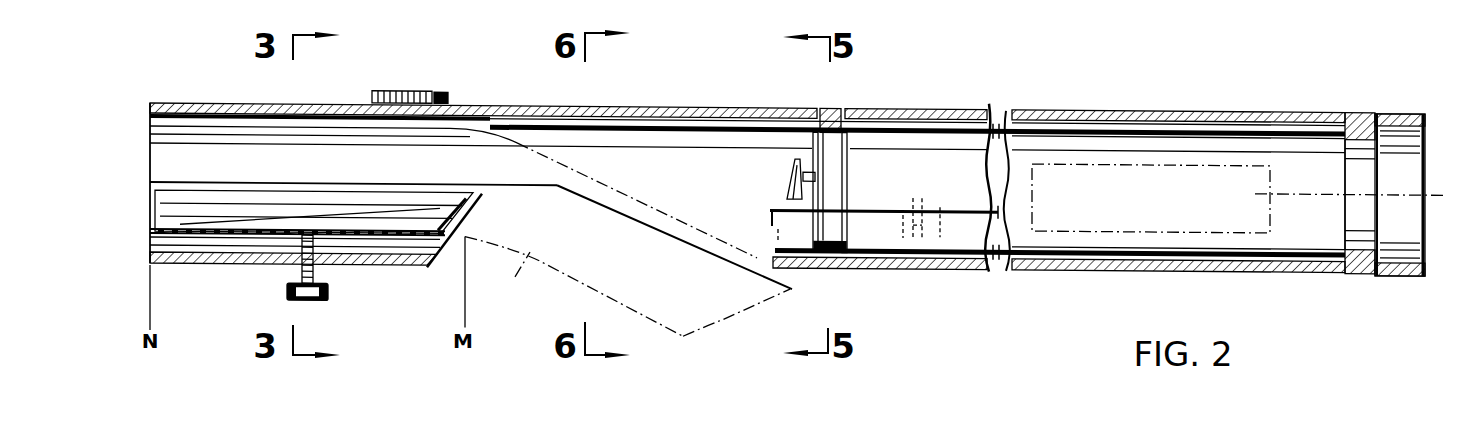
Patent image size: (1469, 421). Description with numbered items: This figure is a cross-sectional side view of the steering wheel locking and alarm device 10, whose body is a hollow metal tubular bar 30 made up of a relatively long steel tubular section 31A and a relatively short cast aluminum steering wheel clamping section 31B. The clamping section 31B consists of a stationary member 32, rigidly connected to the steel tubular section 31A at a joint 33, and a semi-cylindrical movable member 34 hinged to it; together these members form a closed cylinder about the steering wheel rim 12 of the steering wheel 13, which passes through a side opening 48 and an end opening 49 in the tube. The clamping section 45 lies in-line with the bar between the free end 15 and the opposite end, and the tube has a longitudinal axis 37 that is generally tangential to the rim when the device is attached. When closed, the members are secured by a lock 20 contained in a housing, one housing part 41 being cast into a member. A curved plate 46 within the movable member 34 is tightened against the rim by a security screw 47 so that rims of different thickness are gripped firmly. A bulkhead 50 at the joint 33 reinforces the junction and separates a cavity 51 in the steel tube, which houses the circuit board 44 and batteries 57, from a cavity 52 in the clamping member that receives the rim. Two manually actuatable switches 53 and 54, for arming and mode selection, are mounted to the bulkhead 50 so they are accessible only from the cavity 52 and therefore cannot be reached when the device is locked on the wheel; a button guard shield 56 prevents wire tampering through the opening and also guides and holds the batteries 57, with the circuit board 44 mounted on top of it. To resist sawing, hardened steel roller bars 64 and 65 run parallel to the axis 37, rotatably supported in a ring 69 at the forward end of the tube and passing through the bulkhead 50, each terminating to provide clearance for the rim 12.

The device 10 is at (1224, 62).
The steering wheel rim 12 is at (646, 240).
The steering wheel 13 is at (576, 261).
The free end 15 is at (1427, 115).
The lock 20 is at (446, 90).
The tubular bar 30 is at (1109, 103).
The steel tubular section 31A is at (1228, 109).
The steering wheel clamping section 31B is at (733, 79).
The stationary member 32 is at (600, 104).
The joint 33 is at (834, 108).
The movable member 34 is at (420, 268).
The longitudinal axis 37 is at (1440, 190).
The housing part 41 is at (414, 89).
The circuit board 44 is at (1130, 218).
The clamping section 45 is at (149, 236).
The curved plate 46 is at (237, 225).
The security screw 47 is at (328, 291).
The opening 48 is at (690, 254).
The opening 49 is at (150, 235).
The bulkhead 50 is at (848, 165).
The cavity 51 is at (1312, 226).
The cavity 52 is at (664, 171).
The switch 53 is at (788, 182).
The switch 54 is at (781, 175).
The button guard shield 56 is at (770, 213).
The batteries 57 is at (920, 205).
The roller bar 64 is at (973, 111).
The roller bar 65 is at (946, 270).
The ring 69 is at (1355, 112).